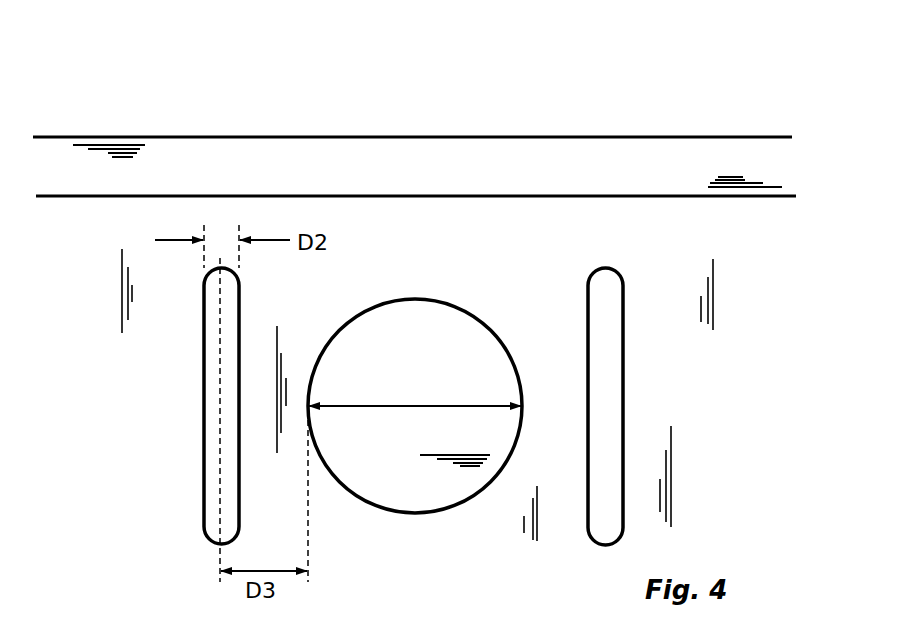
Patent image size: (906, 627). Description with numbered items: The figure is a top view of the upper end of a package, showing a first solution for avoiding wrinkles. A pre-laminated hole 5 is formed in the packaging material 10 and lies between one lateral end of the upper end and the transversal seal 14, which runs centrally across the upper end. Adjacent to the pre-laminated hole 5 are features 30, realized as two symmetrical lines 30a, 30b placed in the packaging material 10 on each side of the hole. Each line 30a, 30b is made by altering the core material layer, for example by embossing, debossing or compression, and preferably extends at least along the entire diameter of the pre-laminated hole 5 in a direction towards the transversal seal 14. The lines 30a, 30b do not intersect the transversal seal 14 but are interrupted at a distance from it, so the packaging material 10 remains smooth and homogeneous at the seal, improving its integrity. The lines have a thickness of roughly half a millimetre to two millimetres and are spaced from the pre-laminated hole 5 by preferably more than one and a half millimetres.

The transversal seal 14 is at (203, 162).
The packaging material 10 is at (499, 268).
The pre-laminated hole 5 is at (423, 497).
The features 30 is at (419, 386).
The first line 30a is at (212, 491).
The second line 30b is at (610, 343).